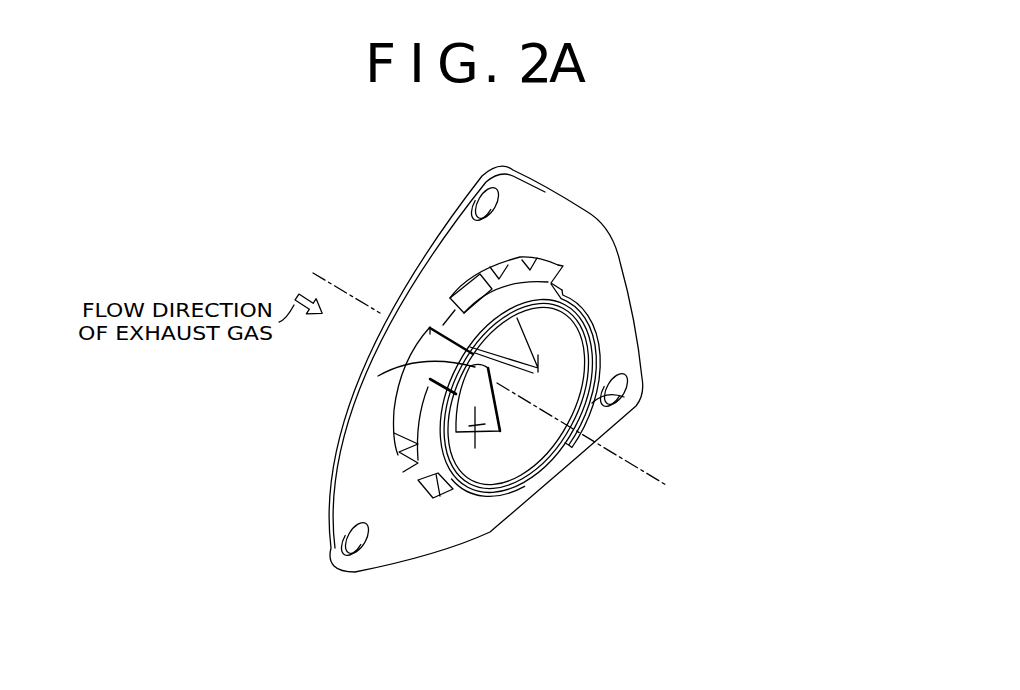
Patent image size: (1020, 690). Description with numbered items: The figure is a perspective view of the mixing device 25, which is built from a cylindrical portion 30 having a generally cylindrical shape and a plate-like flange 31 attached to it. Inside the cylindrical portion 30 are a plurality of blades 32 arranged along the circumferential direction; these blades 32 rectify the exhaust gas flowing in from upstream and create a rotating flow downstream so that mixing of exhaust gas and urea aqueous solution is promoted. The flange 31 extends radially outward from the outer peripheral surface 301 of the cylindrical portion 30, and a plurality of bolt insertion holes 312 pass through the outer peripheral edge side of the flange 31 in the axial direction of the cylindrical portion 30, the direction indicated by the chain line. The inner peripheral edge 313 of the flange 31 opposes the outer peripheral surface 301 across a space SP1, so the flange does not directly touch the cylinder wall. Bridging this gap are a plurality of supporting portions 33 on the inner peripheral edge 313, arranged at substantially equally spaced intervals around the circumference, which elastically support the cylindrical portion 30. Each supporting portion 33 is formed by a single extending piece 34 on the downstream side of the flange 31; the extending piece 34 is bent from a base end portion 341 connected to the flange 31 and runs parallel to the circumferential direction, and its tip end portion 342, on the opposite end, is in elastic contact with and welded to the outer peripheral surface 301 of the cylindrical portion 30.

The mixing device 25 is at (603, 176).
The cylindrical portion 30 is at (567, 410).
The outer peripheral surface 301 is at (398, 366).
The flange 31 is at (573, 212).
The bolt insertion hole 312 is at (348, 543).
The inner peripheral edge 313 is at (503, 220).
The blade 32 is at (456, 412).
The supporting portion 33 is at (606, 313).
The extending piece 34 is at (604, 330).
The base end portion 341 is at (583, 306).
The tip end portion 342 is at (624, 397).
The space SP1 is at (477, 288).